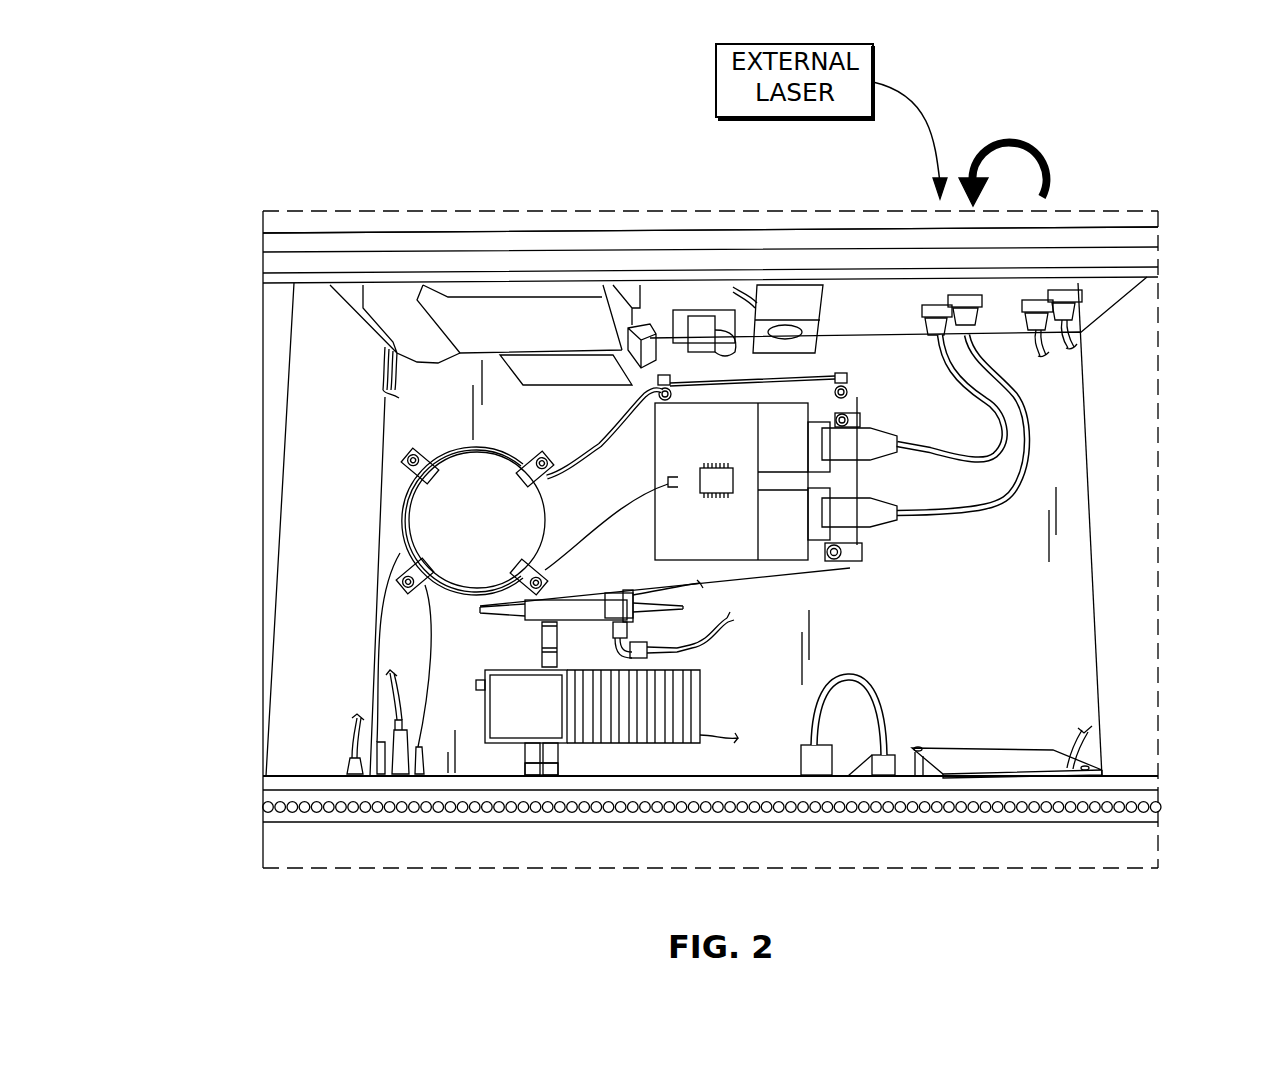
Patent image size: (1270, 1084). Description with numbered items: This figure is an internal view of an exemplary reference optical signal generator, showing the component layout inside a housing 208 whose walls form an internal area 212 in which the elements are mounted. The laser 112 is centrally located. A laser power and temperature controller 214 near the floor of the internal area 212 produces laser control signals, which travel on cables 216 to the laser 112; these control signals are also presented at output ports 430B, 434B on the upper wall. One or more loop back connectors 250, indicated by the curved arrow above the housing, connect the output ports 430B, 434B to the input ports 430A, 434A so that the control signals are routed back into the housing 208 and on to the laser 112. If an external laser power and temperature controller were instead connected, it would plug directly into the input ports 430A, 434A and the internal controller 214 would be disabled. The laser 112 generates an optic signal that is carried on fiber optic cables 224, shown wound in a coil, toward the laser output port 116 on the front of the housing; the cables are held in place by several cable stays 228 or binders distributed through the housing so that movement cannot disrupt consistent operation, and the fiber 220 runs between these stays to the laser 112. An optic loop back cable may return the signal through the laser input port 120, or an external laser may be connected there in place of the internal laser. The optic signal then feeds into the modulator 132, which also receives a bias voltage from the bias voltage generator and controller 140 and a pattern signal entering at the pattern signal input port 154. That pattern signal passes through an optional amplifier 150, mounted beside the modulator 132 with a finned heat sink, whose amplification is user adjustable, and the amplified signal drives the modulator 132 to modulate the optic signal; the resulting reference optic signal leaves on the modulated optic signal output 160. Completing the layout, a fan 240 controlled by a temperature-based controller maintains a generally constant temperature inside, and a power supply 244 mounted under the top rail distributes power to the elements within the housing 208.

The housing 208 is at (480, 242).
The laser 112 is at (712, 466).
The fan 240 is at (790, 298).
The input port 434A is at (935, 303).
The loop back connector 250 is at (1003, 136).
The input port 430A is at (967, 293).
The output port 434B is at (1030, 300).
The output port 430B is at (1067, 290).
The power supply 244 is at (550, 367).
The cable stay 228 is at (407, 578).
The fiber optic cable 224 is at (458, 452).
The optical fiber 220 is at (618, 500).
The cable 216 is at (942, 516).
The internal area 212 is at (1007, 640).
The modulator 132 is at (571, 610).
The amplifier 150 is at (523, 690).
The laser power and temperature controller 214 is at (968, 750).
The laser input port 120 is at (417, 762).
The laser output port 116 is at (398, 748).
The modulated optic signal output 160 is at (378, 765).
The pattern signal input port 154 is at (523, 770).
The bias voltage generator and controller 140 is at (887, 770).